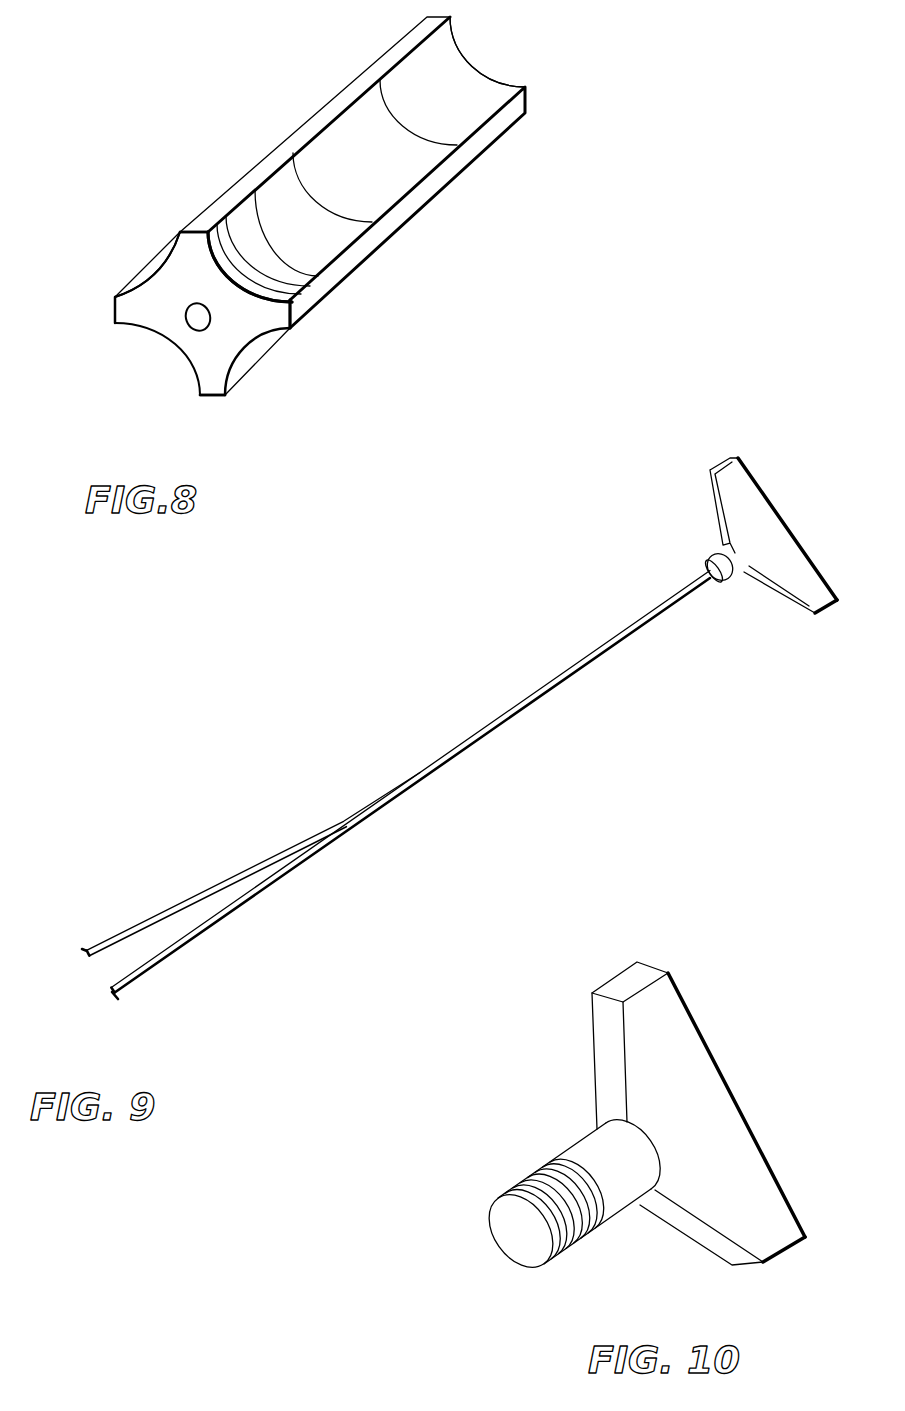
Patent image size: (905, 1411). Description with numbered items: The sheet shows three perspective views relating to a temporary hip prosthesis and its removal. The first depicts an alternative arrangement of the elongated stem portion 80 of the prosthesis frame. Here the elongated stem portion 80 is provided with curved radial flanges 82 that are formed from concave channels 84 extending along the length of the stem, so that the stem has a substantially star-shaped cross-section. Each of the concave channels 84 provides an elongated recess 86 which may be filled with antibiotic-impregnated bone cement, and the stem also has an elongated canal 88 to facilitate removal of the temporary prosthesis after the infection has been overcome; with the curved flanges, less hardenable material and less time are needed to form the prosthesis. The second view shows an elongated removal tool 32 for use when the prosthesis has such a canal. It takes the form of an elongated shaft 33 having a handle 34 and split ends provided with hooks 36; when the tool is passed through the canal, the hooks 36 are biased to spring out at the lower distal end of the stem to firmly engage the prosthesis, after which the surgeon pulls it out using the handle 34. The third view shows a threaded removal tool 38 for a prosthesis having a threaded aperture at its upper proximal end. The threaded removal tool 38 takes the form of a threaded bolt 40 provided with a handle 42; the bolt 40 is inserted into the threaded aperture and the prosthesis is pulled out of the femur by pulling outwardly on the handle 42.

In FIG. 8, the elongated stem portion 80 is at (454, 248).
In FIG. 8, the curved radial flanges 82 is at (262, 172).
In FIG. 8, the concave channels 84 is at (153, 278).
In FIG. 8, the elongated recesses 86 is at (331, 234).
In FIG. 8, the elongated canal 88 is at (200, 317).
In FIG. 9, the elongated removal tool 32 is at (452, 760).
In FIG. 9, the elongated shaft 33 is at (497, 725).
In FIG. 9, the handle 34 is at (765, 525).
In FIG. 9, the hooks 36 is at (82, 951).
In FIG. 10, the threaded removal tool 38 is at (611, 1136).
In FIG. 10, the threaded bolt 40 is at (578, 1226).
In FIG. 10, the handle 42 is at (730, 1124).